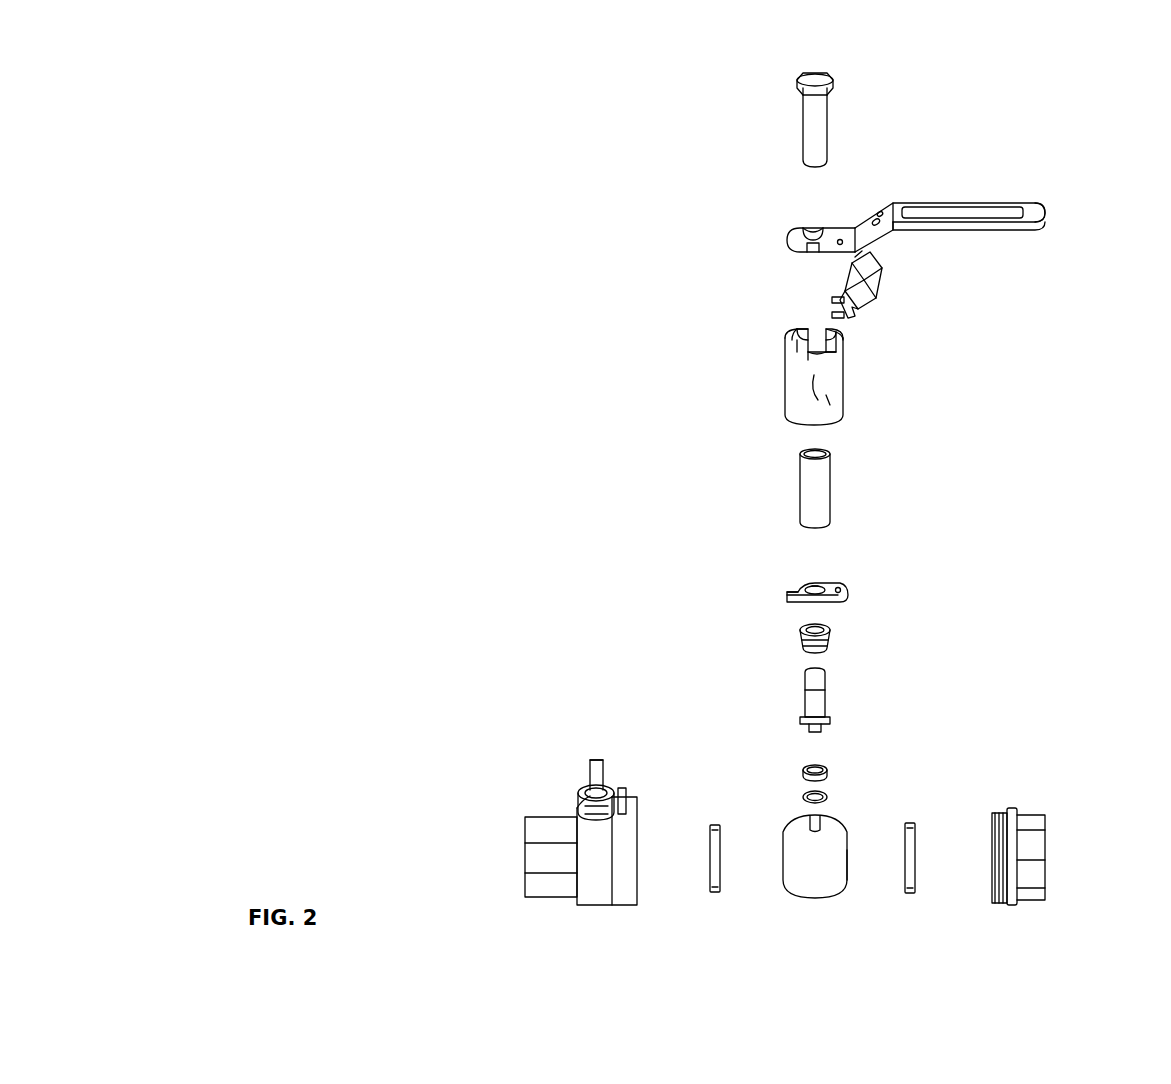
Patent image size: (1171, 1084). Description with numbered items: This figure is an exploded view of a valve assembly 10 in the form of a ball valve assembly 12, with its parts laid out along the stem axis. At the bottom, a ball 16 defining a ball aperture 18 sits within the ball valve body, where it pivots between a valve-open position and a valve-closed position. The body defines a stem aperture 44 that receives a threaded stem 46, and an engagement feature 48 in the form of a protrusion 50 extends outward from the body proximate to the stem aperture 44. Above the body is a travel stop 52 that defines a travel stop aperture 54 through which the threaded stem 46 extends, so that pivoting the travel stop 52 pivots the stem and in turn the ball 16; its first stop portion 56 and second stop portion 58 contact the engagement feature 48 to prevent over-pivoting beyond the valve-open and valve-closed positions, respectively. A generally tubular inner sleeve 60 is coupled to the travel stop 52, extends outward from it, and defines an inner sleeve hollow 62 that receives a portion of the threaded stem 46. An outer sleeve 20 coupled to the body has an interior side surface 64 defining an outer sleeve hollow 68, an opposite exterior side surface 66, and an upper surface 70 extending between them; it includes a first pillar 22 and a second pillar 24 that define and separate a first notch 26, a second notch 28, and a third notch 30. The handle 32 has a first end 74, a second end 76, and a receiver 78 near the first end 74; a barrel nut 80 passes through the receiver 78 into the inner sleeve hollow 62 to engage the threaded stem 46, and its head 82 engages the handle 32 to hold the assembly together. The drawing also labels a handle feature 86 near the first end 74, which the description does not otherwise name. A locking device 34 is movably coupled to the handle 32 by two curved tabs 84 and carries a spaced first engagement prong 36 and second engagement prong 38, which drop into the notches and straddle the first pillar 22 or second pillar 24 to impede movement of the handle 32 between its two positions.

The valve assembly 10 is at (1052, 170).
The ball valve assembly 12 is at (1105, 165).
The ball 16 is at (808, 880).
The ball aperture 18 is at (850, 860).
The outer sleeve 20 is at (818, 378).
The first pillar 22 is at (837, 345).
The second pillar 24 is at (817, 372).
The first notch 26 is at (800, 331).
The second notch 28 is at (838, 362).
The third notch 30 is at (800, 368).
The handle 32 is at (908, 192).
The locking device 34 is at (890, 285).
The first engagement prong 36 is at (830, 305).
The second engagement prong 38 is at (820, 323).
The stem aperture 44 is at (580, 793).
The threaded stem 46 is at (830, 698).
The engagement feature 48 is at (588, 765).
The protrusion 50 is at (598, 758).
The travel stop 52 is at (828, 566).
The travel stop aperture 54 is at (828, 587).
The first stop portion 56 is at (815, 582).
The second stop portion 58 is at (793, 594).
The inner sleeve 60 is at (838, 490).
The inner sleeve hollow 62 is at (826, 446).
The interior side surface 64 is at (797, 356).
The exterior side surface 66 is at (812, 402).
The outer sleeve hollow 68 is at (800, 336).
The upper surface 70 is at (835, 338).
The first end 74 is at (788, 242).
The second end 76 is at (1046, 215).
The receiver 78 is at (815, 234).
The barrel nut 80 is at (800, 127).
The head 82 is at (806, 74).
The curved tabs 84 is at (878, 258).
The handle bend 86 is at (880, 212).